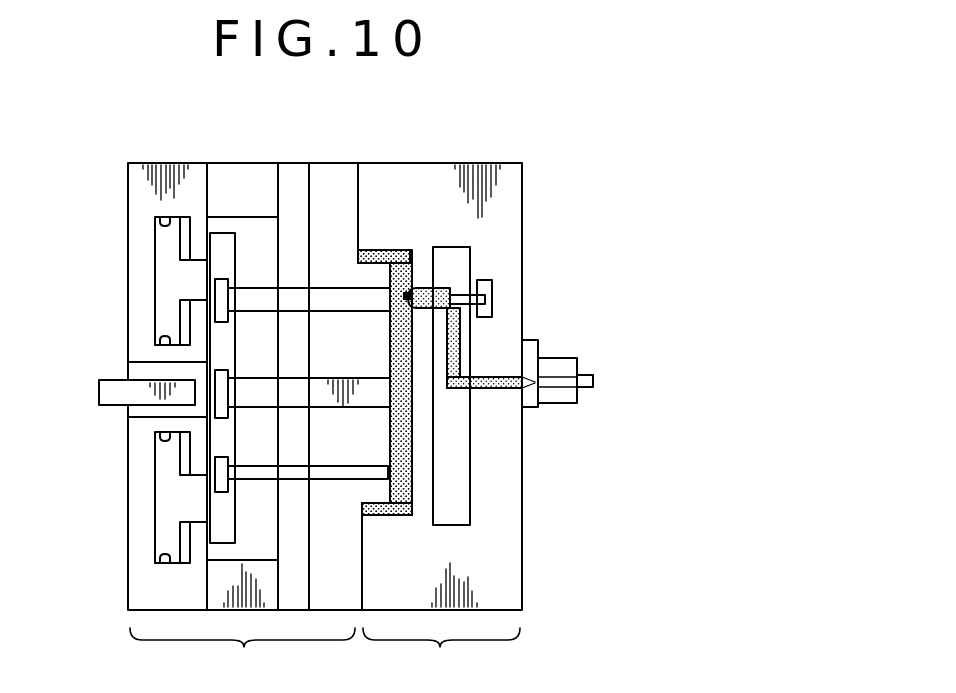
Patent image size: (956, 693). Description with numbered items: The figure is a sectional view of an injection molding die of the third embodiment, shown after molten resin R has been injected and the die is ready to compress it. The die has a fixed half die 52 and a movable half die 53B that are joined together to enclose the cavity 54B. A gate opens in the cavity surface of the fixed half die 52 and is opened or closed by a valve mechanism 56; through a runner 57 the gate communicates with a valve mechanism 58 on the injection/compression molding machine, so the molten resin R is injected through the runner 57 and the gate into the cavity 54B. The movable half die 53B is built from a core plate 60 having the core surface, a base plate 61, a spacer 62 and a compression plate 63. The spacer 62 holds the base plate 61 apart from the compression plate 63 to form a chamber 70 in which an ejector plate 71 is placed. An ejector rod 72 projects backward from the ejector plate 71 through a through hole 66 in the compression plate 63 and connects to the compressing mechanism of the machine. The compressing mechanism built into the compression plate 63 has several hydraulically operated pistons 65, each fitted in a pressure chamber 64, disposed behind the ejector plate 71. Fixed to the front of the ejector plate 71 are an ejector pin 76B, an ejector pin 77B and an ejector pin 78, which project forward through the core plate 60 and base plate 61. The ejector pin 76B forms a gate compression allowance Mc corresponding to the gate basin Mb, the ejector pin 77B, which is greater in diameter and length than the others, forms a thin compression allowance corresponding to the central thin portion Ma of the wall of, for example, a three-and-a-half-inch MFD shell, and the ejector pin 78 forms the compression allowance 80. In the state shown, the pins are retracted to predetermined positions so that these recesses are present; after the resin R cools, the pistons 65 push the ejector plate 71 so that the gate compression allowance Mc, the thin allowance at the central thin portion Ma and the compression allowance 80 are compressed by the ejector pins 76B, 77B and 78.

The fixed half die 52 is at (441, 657).
The movable half die 53B is at (242, 657).
The cavity 54B is at (402, 517).
The valve mechanism 56 is at (493, 272).
The runner 57 is at (458, 347).
The valve mechanism 58 is at (578, 363).
The core plate 60 is at (340, 173).
The base plate 61 is at (292, 178).
The spacer 62 is at (222, 182).
The compression plate 63 is at (144, 174).
The pressure chamber 64 is at (182, 217).
The piston 65 is at (170, 278).
The through hole 66 is at (167, 362).
The chamber 70 is at (257, 222).
The ejector plate 71 is at (227, 532).
The ejector rod 72 is at (117, 393).
The ejector pin 76B is at (340, 312).
The ejector pin 77B is at (338, 408).
The ejector pin 78 is at (336, 480).
The compression allowance 80 is at (390, 470).
The central thin portion Ma is at (415, 393).
The gate basin Mb is at (400, 283).
The gate compression allowance Mc is at (385, 283).
The molten resin R is at (487, 388).